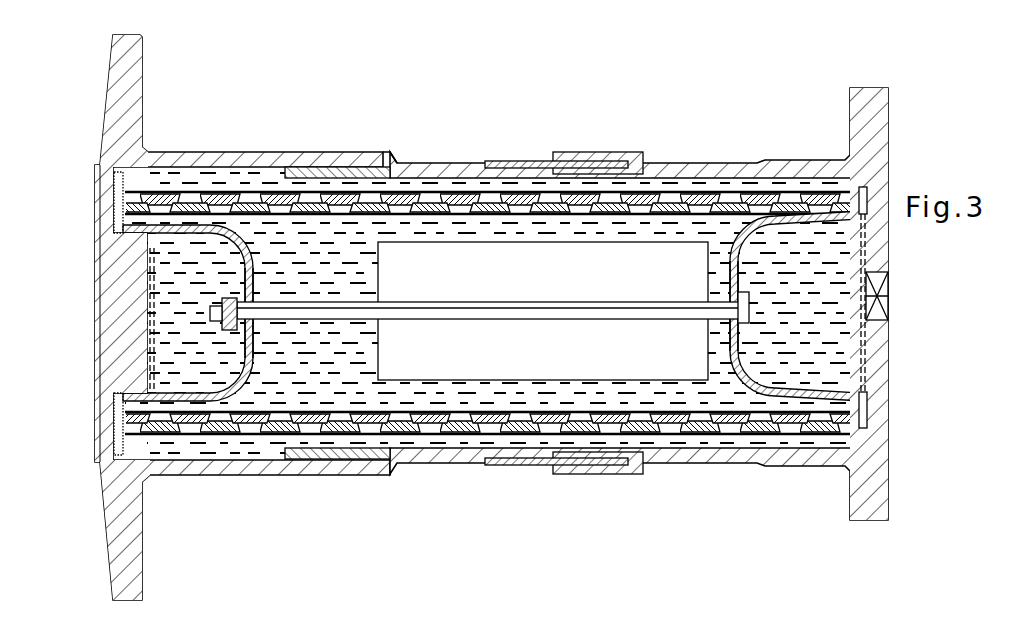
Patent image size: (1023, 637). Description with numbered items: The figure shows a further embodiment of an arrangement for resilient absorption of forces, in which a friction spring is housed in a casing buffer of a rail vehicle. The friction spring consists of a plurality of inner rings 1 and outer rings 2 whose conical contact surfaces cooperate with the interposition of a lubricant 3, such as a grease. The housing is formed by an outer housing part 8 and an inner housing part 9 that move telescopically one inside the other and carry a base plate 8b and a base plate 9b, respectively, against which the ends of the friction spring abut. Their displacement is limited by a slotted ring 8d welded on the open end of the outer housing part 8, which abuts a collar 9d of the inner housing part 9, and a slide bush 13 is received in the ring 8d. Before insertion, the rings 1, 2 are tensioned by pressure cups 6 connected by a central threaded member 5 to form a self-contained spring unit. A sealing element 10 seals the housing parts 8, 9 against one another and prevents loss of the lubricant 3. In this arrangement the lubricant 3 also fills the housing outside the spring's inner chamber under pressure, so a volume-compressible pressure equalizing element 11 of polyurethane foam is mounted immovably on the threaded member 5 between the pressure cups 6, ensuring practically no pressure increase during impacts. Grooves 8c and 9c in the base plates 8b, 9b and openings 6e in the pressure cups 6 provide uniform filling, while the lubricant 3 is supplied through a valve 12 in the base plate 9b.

The inner rings 1 is at (673, 416).
The outer rings 2 is at (652, 432).
The lubricant 3 is at (290, 373).
The central threaded member 5 is at (736, 307).
The pressure cups 6 is at (199, 405).
The openings 6e is at (148, 252).
The outer housing part 8 is at (251, 163).
The base plate 8b is at (122, 552).
The groove 8c is at (118, 430).
The slotted ring 8d is at (456, 158).
The inner housing part 9 is at (786, 170).
The base plate 9b is at (868, 113).
The groove 9c is at (868, 413).
The collar 9d is at (330, 176).
The sealing element 10 is at (588, 150).
The pressure equalizing element 11 is at (528, 350).
The valve 12 is at (880, 300).
The slide bush 13 is at (526, 164).